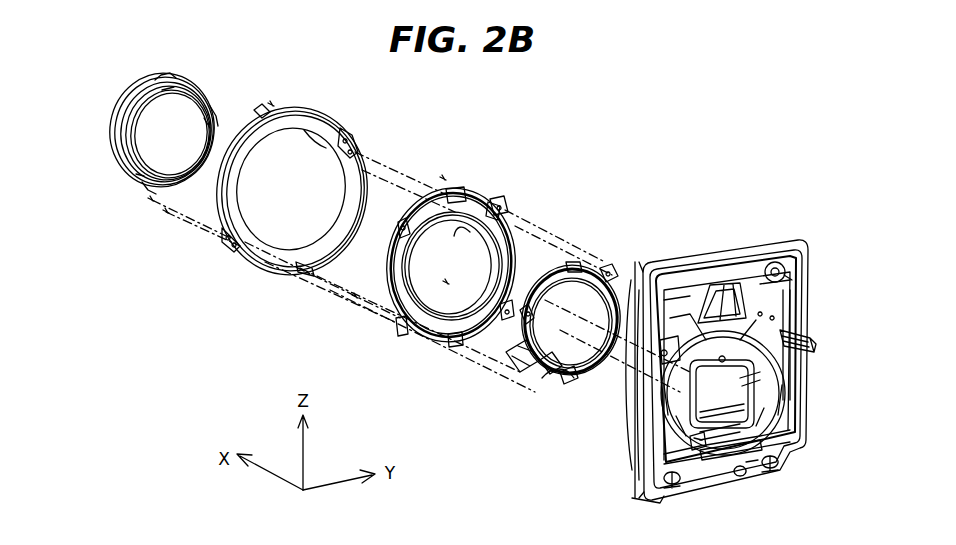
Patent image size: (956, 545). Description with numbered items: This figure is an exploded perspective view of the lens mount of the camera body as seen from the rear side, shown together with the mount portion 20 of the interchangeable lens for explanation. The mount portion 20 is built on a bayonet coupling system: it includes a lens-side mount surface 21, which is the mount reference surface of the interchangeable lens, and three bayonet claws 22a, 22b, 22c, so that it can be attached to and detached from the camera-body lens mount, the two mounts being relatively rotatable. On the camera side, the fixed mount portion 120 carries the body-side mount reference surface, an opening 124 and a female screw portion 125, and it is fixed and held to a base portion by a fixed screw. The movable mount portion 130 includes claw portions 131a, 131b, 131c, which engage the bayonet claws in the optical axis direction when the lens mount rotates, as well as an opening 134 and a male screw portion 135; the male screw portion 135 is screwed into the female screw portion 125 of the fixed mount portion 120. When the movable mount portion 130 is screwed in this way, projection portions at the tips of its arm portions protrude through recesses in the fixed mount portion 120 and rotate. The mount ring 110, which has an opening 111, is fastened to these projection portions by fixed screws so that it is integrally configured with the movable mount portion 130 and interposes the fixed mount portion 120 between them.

The mount portion 20 is at (112, 170).
The lens-side mount surface 21 is at (122, 104).
The bayonet claw 22a is at (158, 75).
The bayonet claw 22b is at (145, 190).
The bayonet claw 22c is at (216, 118).
The mount ring 110 is at (224, 234).
The opening 111 is at (308, 146).
The fixed mount portion 120 is at (392, 305).
The opening 124 is at (476, 228).
The female screw portion 125 is at (504, 222).
The movable mount portion 130 is at (606, 380).
The claw portion 131a is at (522, 320).
The claw portion 131b is at (570, 372).
The claw portion 131c is at (614, 270).
The opening 134 is at (532, 362).
The male screw portion 135 is at (576, 266).